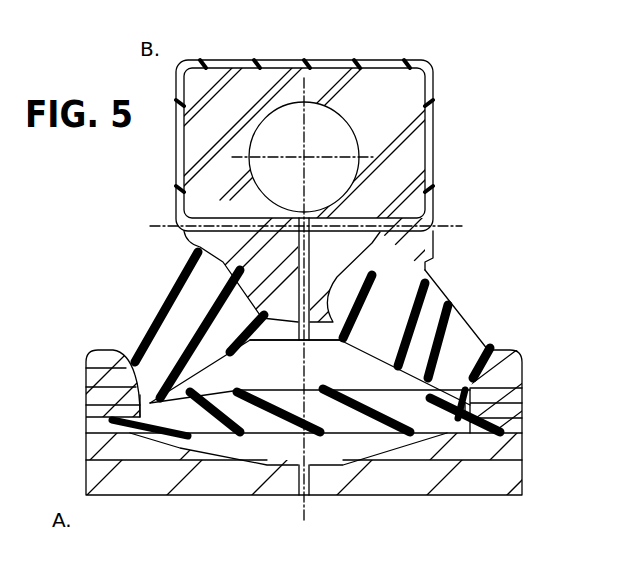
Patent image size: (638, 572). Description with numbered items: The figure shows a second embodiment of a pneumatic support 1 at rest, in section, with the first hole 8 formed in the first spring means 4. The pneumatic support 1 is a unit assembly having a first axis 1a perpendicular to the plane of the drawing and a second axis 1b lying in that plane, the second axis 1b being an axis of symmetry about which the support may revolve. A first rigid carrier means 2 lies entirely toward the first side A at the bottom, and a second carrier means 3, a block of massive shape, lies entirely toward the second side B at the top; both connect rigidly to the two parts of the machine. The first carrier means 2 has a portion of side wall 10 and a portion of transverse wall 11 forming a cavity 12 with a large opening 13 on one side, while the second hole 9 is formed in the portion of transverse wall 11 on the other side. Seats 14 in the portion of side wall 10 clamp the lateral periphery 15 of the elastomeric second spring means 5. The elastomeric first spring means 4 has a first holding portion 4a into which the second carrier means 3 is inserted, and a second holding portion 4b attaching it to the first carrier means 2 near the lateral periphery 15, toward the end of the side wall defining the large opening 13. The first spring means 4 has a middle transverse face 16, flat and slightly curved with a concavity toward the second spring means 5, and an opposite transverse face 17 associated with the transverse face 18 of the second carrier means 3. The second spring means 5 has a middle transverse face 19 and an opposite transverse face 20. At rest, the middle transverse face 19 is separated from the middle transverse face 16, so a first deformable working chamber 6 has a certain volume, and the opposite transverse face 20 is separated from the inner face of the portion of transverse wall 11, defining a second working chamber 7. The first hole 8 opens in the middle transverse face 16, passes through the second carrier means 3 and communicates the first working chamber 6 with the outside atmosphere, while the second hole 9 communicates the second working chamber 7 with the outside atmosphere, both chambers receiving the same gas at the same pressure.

The pneumatic support 1 is at (487, 318).
The first axis 1a is at (311, 147).
The second axis 1b is at (298, 94).
The first rigid carrier means 2 is at (505, 472).
The second carrier means 3 is at (408, 103).
The first spring means 4 is at (427, 310).
The first holding portion 4a is at (182, 193).
The second holding portion 4b is at (482, 373).
The second spring means 5 is at (185, 424).
The first deformable working chamber 6 is at (305, 378).
The second working chamber 7 is at (214, 449).
The first hole 8 is at (297, 276).
The second hole 9 is at (312, 482).
The portion of side wall 10 is at (513, 395).
The portion of transverse wall 11 is at (246, 480).
The cavity 12 is at (422, 355).
The large opening 13 is at (378, 449).
The seats 14 is at (517, 422).
The lateral periphery 15 is at (103, 425).
The middle transverse face 16 is at (280, 343).
The opposite transverse face 17 is at (412, 226).
The transverse face 18 is at (215, 308).
The middle transverse face 19 is at (190, 387).
The opposite transverse face 20 is at (385, 432).